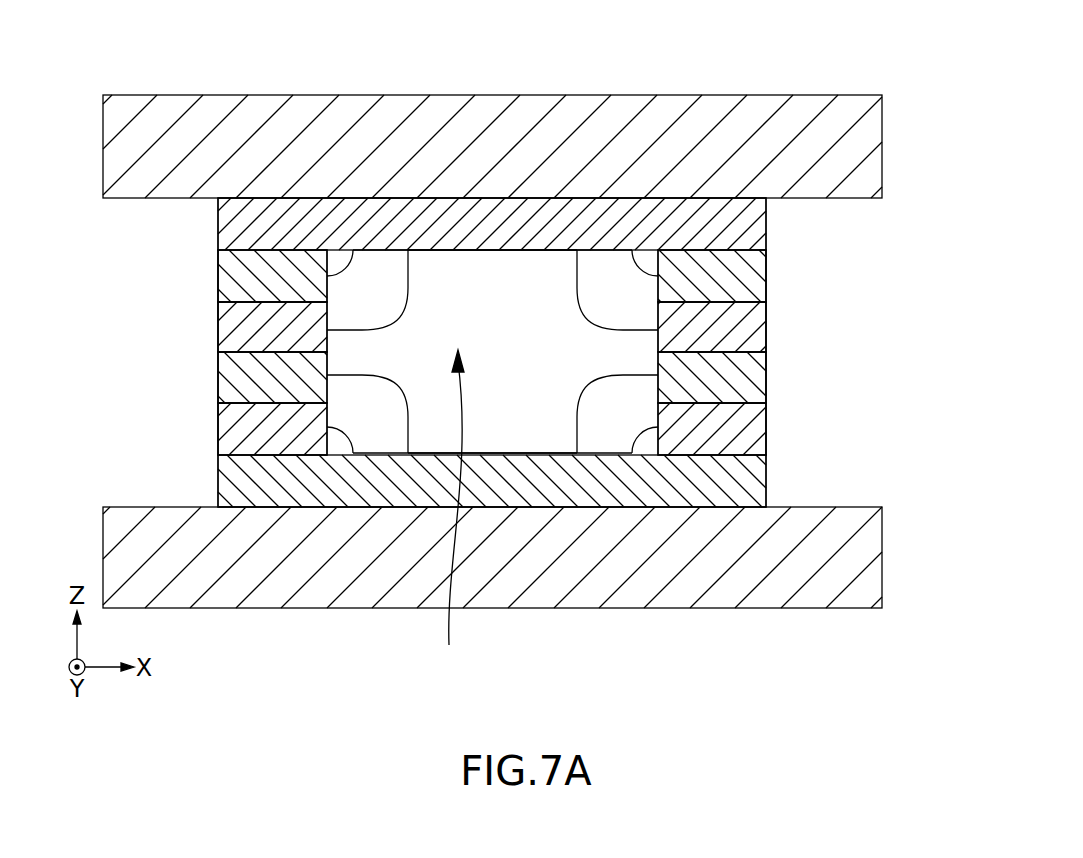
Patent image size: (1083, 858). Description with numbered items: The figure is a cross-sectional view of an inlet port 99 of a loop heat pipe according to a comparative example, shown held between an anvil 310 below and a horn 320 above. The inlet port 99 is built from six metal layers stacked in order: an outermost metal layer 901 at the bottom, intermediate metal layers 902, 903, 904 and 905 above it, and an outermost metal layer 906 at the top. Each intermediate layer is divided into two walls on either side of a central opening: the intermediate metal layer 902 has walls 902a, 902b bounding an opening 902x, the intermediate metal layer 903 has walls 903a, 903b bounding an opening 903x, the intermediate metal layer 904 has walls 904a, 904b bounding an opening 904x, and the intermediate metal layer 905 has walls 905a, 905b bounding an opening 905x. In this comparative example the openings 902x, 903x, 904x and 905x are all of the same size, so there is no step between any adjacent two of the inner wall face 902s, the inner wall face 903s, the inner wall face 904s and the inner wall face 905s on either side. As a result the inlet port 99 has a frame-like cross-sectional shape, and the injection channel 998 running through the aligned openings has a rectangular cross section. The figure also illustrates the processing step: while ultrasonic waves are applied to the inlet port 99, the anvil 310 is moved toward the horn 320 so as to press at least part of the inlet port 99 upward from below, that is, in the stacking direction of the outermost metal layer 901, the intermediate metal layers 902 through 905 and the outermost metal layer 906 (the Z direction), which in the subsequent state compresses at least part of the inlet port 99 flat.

The inlet port 99 is at (878, 198).
The anvil 310 is at (868, 556).
The horn 320 is at (868, 147).
The outermost metal layer 901 is at (779, 477).
The intermediate metal layer 902 is at (779, 425).
The intermediate metal layer 903 is at (779, 373).
The intermediate metal layer 904 is at (779, 322).
The intermediate metal layer 905 is at (779, 272).
The outermost metal layer 906 is at (779, 227).
The wall of the intermediate metal layer 904 904a is at (255, 323).
The wall of the intermediate metal layer 904 904b is at (733, 327).
The wall of the intermediate metal layer 905 905a is at (282, 277).
The wall of the intermediate metal layer 905 905b is at (705, 277).
The wall of the intermediate metal layer 902 902a is at (287, 428).
The wall of the intermediate metal layer 902 902b is at (705, 428).
The wall of the intermediate metal layer 903 903a is at (257, 380).
The wall of the intermediate metal layer 903 903b is at (733, 378).
The inner wall face 904s is at (405, 252).
The inner wall face 905s is at (350, 264).
The inner wall face 902s is at (350, 441).
The inner wall face 903s is at (405, 452).
The opening 904x is at (538, 327).
The opening 905x is at (470, 273).
The opening 902x is at (503, 432).
The opening 903x is at (548, 380).
The injection channel 998 is at (450, 511).